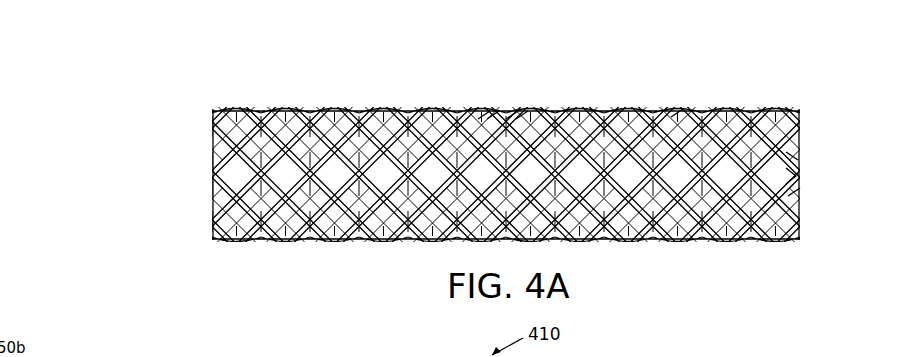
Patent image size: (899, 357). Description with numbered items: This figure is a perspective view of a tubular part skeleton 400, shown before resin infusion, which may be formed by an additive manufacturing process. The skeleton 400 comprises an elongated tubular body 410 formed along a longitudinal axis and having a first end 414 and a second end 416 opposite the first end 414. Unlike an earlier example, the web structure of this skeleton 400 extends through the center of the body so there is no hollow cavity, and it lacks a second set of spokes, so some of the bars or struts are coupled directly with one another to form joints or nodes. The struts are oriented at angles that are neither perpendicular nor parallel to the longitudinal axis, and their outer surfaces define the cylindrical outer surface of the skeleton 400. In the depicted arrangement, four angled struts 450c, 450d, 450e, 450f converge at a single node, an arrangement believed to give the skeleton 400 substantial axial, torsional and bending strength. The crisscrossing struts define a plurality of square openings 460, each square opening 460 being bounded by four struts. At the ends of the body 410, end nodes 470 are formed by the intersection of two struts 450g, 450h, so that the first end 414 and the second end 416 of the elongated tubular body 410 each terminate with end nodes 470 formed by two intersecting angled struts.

The tubular part skeleton 400 is at (277, 57).
The elongated tubular body 410 is at (724, 88).
The first end 414 is at (213, 137).
The second end 416 is at (800, 141).
The angled strut 450c is at (485, 112).
The angled strut 450d is at (493, 112).
The angled strut 450e is at (512, 112).
The angled strut 450f is at (522, 112).
The strut 450g is at (798, 158).
The strut 450h is at (800, 188).
The square opening 460 is at (677, 110).
The end node 470 is at (796, 176).